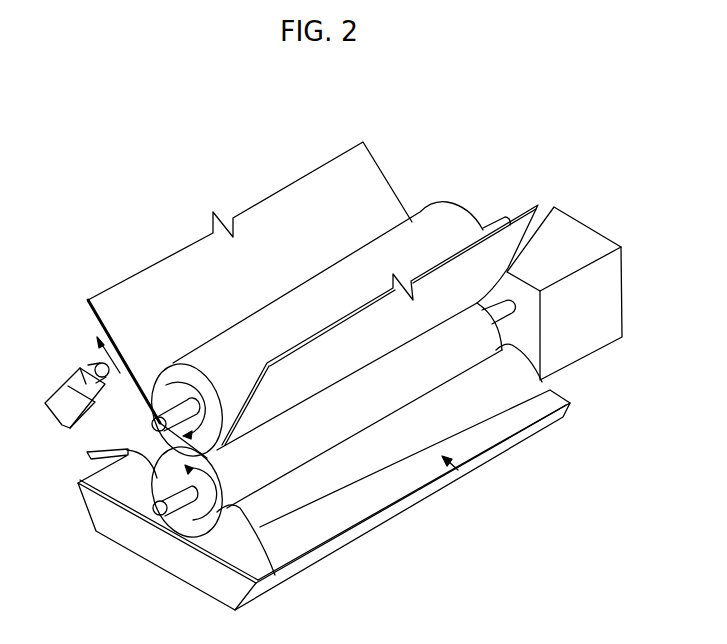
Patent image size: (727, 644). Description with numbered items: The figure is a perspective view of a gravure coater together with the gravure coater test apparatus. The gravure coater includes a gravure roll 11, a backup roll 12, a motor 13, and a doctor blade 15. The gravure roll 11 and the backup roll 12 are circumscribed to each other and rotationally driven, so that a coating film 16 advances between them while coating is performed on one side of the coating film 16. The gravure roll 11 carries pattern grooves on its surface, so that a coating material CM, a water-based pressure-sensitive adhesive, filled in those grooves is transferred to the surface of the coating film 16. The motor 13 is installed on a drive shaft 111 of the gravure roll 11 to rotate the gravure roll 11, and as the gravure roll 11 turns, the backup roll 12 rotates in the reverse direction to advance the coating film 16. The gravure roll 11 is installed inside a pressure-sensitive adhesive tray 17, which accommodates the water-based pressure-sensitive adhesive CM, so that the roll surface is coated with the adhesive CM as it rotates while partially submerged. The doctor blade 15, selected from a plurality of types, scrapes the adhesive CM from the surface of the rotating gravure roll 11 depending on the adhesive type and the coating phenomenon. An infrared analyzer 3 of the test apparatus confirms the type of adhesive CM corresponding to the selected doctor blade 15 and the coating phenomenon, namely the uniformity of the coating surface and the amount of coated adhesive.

The infrared analyzer 3 is at (60, 395).
The gravure roll 11 is at (125, 480).
The backup roll 12 is at (155, 408).
The motor 13 is at (615, 297).
The doctor blade 15 is at (458, 472).
The coating film 16 is at (150, 264).
The pressure-sensitive adhesive tray 17 is at (145, 552).
The drive shaft 111 is at (513, 313).
The coating material CM is at (235, 560).